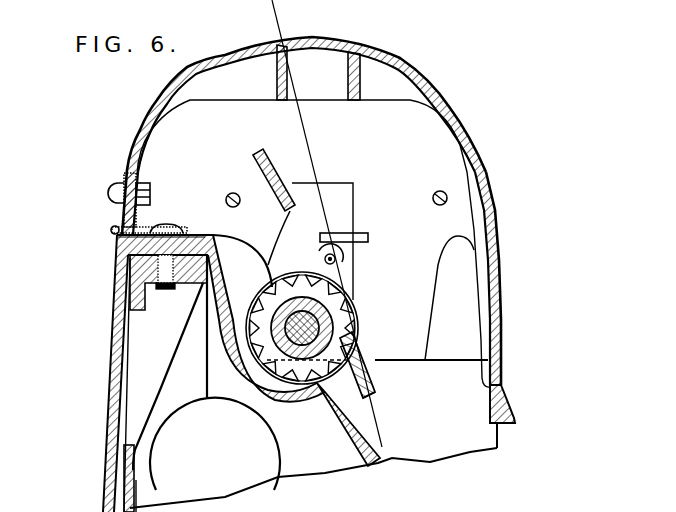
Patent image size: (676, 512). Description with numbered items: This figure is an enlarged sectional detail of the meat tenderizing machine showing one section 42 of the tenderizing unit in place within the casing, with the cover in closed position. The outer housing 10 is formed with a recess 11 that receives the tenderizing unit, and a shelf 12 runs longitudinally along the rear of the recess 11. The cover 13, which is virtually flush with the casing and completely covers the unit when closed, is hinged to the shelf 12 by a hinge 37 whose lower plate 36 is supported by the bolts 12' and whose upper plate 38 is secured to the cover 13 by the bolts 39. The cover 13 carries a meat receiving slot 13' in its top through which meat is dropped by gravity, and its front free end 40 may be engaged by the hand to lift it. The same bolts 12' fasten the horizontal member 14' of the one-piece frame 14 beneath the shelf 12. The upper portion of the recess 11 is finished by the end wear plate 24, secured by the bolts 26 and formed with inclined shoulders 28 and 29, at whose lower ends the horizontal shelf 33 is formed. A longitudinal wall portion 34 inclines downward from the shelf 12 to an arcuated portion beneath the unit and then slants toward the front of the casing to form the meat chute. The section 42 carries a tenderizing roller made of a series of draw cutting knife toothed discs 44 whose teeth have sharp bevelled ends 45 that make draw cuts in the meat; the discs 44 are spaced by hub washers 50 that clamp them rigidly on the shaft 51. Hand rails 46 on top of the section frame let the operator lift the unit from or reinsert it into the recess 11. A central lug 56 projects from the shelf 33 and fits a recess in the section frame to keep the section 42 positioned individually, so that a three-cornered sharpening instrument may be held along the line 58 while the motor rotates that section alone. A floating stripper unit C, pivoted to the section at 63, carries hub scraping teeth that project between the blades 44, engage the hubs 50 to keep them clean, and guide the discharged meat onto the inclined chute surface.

The outer housing 10 is at (118, 293).
The recess 11 is at (405, 298).
The shelf 12 is at (234, 227).
The bolts 12' is at (173, 215).
The cover portion 13 is at (313, 136).
The meat receiving slot 13' is at (345, 259).
The frame 14 is at (98, 385).
The horizontal member 14' is at (133, 282).
The end wear plate 24 is at (458, 150).
The bolts 26 is at (241, 204).
The inclined shoulder 28 is at (437, 272).
The inclined shoulder 29 is at (278, 272).
The horizontal shelf 33 is at (376, 359).
The longitudinal wall portion 34 is at (218, 280).
The lower plate 36 is at (117, 243).
The hinge 37 is at (113, 227).
The upper plate 38 is at (124, 178).
The bolts 39 is at (153, 200).
The front free end 40 is at (517, 418).
The section 42 is at (302, 233).
The draw cutting knife toothed discs 44 is at (352, 305).
The sharp bevelled ends 45 is at (348, 312).
The hand rails 46 is at (272, 152).
The hub washers 50 is at (300, 362).
The shaft 51 is at (300, 324).
The central lug 56 is at (355, 352).
The line 58 is at (296, 68).
The pivot 63 is at (355, 230).
The floating stripper unit C is at (372, 398).